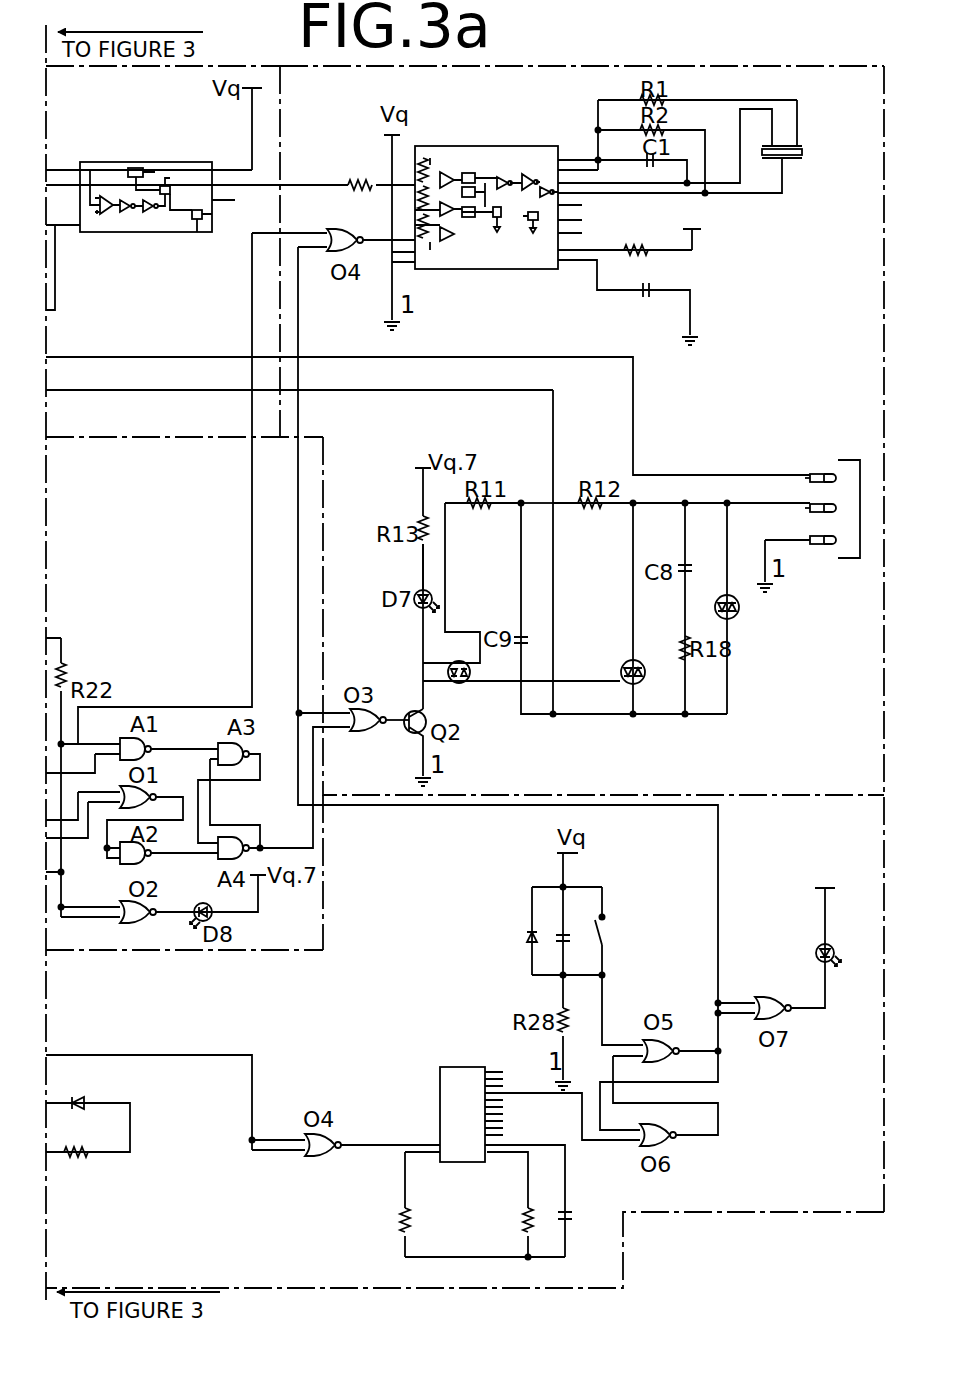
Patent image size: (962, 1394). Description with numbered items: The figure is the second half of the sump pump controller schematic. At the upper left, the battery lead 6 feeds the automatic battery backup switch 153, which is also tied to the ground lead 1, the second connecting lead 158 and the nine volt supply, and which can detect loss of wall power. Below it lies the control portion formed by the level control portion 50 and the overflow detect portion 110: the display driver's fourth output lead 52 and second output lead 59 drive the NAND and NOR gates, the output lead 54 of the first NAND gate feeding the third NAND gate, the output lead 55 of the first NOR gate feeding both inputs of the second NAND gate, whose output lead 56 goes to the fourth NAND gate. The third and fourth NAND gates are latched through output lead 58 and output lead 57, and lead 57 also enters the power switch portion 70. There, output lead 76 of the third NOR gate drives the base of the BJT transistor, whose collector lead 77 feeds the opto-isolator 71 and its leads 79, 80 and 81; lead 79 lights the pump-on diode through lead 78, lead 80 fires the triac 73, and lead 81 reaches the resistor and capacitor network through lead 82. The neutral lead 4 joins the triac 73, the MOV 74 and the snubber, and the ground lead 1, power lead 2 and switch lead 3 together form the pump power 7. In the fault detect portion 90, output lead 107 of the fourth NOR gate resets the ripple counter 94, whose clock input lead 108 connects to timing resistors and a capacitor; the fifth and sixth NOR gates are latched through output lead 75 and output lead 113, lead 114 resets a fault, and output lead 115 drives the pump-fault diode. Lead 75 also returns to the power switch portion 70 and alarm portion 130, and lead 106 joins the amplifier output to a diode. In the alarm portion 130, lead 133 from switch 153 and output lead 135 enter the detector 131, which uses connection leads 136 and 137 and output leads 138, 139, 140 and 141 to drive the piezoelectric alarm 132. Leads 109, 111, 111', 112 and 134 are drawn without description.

The ground lead 1 is at (66, 234).
The power lead 2 is at (830, 479).
The switch lead 3 is at (830, 510).
The neutral lead 4 is at (558, 717).
The battery lead 6 is at (64, 182).
The pump power 7 is at (835, 541).
The level control portion 50 is at (184, 698).
The fourth output lead 52 is at (559, 930).
The output lead of the first NAND gate 54 is at (184, 735).
The output lead of the first NOR gate 55 is at (146, 817).
The output lead of the second NAND gate 56 is at (184, 868).
The output lead of the fourth NAND gate 57 is at (337, 733).
The output lead of the third NAND gate 58 is at (233, 798).
The second output lead 59 is at (300, 230).
The power switch portion 70 is at (603, 616).
The opto-isolator 71 is at (464, 687).
The triac 73 is at (651, 674).
The metal-oxide varistor 74 is at (746, 609).
The output lead from the fifth NOR gate 75 is at (311, 253).
The output lead from the third NOR gate 76 is at (396, 714).
The lead 77 is at (437, 690).
The lead 78 is at (420, 564).
The lead 79 is at (420, 640).
The lead 80 is at (509, 684).
The lead 81 is at (459, 630).
The lead 82 is at (543, 500).
The fault detect portion 90 is at (465, 1126).
The ripple counter 94 is at (452, 1110).
The lead 106 is at (135, 1133).
The output lead of the fourth NOR gate 107 is at (393, 1108).
The input lead 108 is at (402, 1167).
The common line 109 is at (467, 1258).
The overflow detect portion 110 is at (184, 454).
The capacitor line 111 is at (554, 1186).
The resistor line 111' is at (490, 1206).
The timer output line 112 is at (560, 1097).
The output lead from the sixth NOR gate 113 is at (699, 1141).
The lead 114 is at (614, 1040).
The output lead from the seventh NOR gate 115 is at (812, 1018).
The alarm portion 130 is at (582, 251).
The detector 131 is at (486, 192).
The piezoelectric alarm 132 is at (807, 154).
The lead 133 is at (295, 182).
The resistor line 134 is at (385, 182).
The output lead from the fourth NOR gate 135 is at (368, 252).
The connection lead 136 is at (607, 294).
The connection lead 137 is at (620, 252).
The output lead 138 is at (752, 198).
The output lead 139 is at (748, 180).
The output lead 140 is at (596, 103).
The output lead 141 is at (802, 103).
The automatic battery backup switch 153 is at (146, 182).
The second connecting lead 158 is at (57, 166).